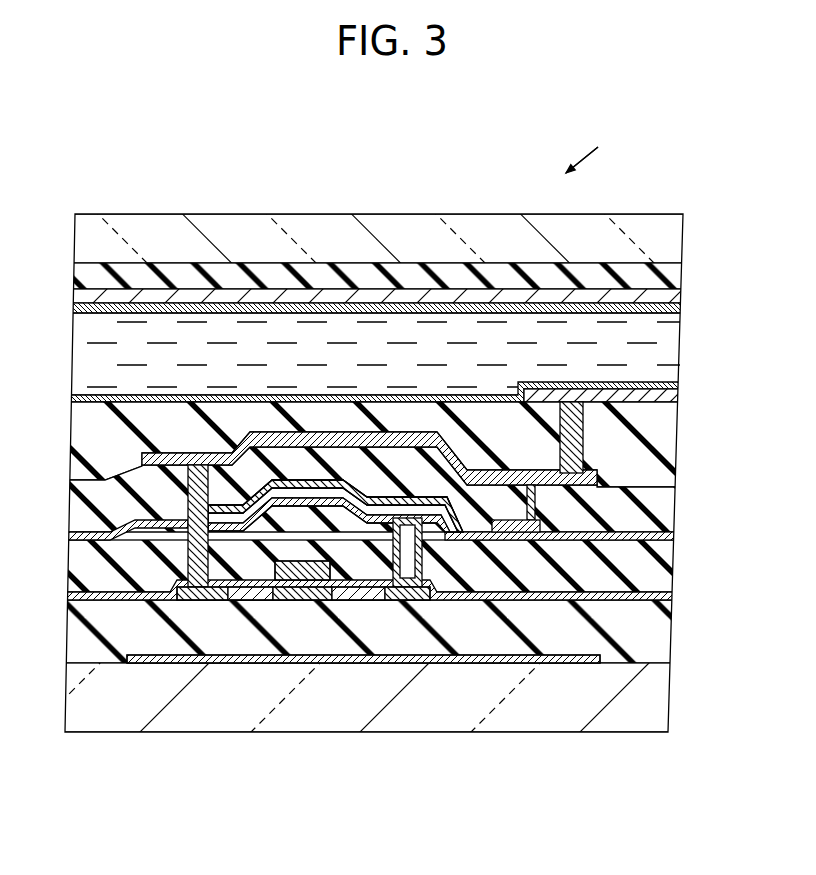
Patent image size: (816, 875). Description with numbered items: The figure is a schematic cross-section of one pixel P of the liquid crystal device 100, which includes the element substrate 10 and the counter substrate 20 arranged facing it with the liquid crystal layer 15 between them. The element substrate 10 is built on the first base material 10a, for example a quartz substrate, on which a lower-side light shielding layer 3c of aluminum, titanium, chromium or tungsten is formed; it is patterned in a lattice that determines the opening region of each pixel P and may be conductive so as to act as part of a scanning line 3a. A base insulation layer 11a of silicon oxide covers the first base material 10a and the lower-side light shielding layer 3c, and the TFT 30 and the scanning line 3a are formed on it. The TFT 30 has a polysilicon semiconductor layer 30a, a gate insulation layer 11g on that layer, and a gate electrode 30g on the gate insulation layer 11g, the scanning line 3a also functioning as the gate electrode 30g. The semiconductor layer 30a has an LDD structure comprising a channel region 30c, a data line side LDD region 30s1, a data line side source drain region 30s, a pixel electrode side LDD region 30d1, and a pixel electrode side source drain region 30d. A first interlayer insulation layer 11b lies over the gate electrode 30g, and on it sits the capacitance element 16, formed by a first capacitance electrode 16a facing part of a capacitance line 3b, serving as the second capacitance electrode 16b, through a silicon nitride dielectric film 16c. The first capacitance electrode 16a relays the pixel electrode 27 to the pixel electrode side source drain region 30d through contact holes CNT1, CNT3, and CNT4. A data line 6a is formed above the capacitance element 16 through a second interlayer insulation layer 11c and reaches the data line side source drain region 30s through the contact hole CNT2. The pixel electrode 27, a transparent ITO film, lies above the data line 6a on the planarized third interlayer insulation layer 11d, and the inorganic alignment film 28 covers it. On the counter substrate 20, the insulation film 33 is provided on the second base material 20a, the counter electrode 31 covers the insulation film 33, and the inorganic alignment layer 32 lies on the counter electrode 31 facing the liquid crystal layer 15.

The liquid crystal device 100 is at (621, 137).
The pixel P is at (648, 137).
The counter substrate 20 is at (750, 212).
The second base material 20a is at (678, 234).
The insulation film 33 is at (679, 272).
The counter electrode 31 is at (680, 298).
The inorganic alignment layer 32 is at (681, 306).
The liquid crystal layer 15 is at (674, 346).
The inorganic alignment film 28 is at (678, 385).
The pixel electrode 27 is at (678, 396).
The element substrate 10 is at (750, 365).
The first base material 10a is at (672, 693).
The base insulation layer 11a is at (670, 640).
The gate insulation layer 11g is at (674, 596).
The first interlayer insulation layer 11b is at (670, 566).
The second interlayer insulation layer 11c is at (670, 504).
The third interlayer insulation layer 11d is at (674, 454).
The capacitance element 16 is at (400, 358).
The first capacitance electrode 16a is at (258, 508).
The dielectric film 16c is at (672, 537).
The second capacitance electrode 16b is at (356, 488).
The capacitance line 3b is at (335, 506).
The data line 6a is at (157, 458).
The TFT 30 is at (450, 797).
The semiconductor layer 30a is at (203, 668).
The data line side source drain region 30s is at (197, 600).
The data line side LDD region 30s1 is at (240, 600).
The channel region 30c is at (302, 600).
The pixel electrode side LDD region 30d1 is at (357, 600).
The pixel electrode side source drain region 30d is at (405, 600).
The gate electrode 30g is at (284, 563).
The scanning line 3a is at (302, 570).
The lower-side light shielding layer 3c is at (598, 663).
The contact hole CNT1 is at (415, 550).
The contact hole CNT2 is at (192, 560).
The contact hole CNT3 is at (542, 505).
The contact hole CNT4 is at (565, 440).